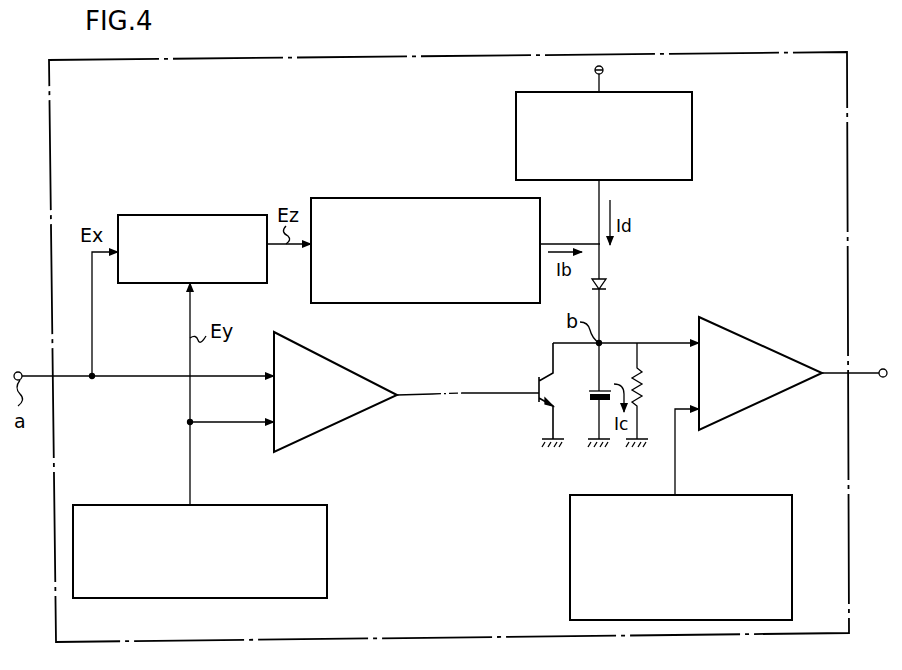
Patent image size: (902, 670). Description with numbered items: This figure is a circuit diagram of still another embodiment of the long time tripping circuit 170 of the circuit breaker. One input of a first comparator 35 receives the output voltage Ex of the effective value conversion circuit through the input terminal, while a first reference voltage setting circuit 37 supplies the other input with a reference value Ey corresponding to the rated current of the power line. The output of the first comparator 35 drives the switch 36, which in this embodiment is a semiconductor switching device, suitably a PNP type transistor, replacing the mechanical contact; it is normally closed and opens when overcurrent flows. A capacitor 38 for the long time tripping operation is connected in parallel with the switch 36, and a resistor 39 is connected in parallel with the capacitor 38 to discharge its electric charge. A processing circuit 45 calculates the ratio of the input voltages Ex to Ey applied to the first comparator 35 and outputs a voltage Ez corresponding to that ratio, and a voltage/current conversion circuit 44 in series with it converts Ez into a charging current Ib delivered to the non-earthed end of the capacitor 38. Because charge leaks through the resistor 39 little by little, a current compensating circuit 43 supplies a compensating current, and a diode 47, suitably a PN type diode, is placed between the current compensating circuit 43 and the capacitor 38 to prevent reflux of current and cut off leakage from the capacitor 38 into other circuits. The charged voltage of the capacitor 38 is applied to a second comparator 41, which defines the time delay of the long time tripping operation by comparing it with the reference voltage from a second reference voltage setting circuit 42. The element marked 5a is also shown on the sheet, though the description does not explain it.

The long time tripping circuit 170 is at (320, 52).
The processing circuit 45 is at (161, 214).
The voltage/current conversion circuit 44 is at (310, 199).
The current compensating circuit 43 is at (692, 122).
The first reference voltage setting circuit 37 is at (119, 504).
The second reference voltage setting circuit 42 is at (570, 530).
The first comparator 35 is at (333, 362).
The second comparator 41 is at (746, 336).
The power supply terminal 5a is at (603, 70).
The diode 47 is at (606, 286).
The switch 36 is at (531, 402).
The capacitor 38 is at (588, 395).
The resistor 39 is at (642, 374).